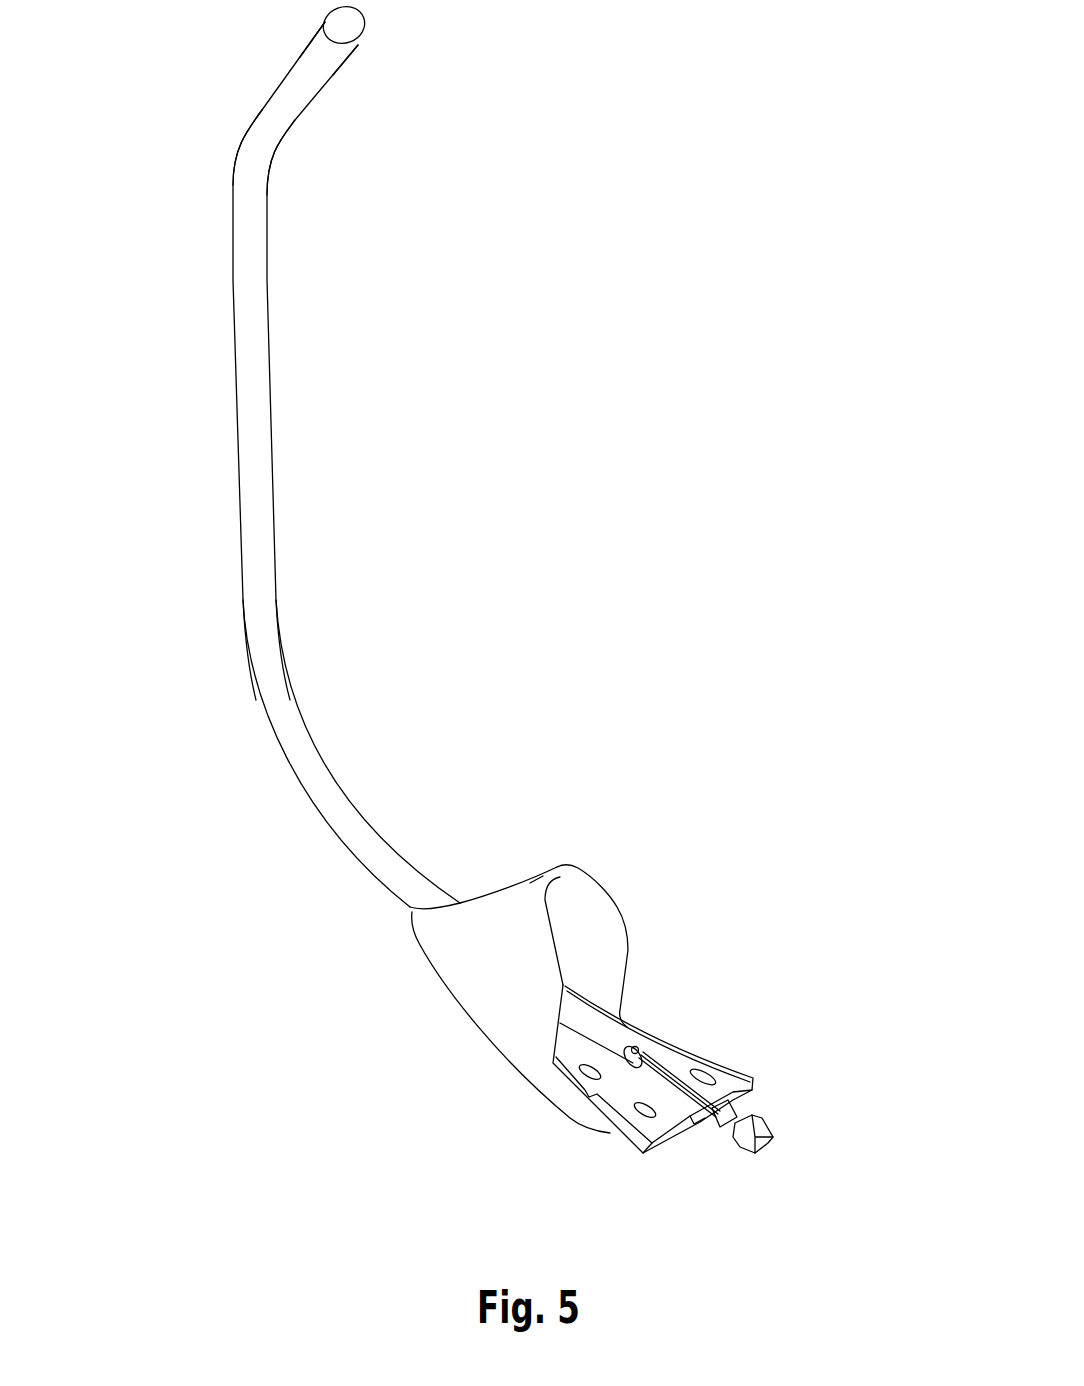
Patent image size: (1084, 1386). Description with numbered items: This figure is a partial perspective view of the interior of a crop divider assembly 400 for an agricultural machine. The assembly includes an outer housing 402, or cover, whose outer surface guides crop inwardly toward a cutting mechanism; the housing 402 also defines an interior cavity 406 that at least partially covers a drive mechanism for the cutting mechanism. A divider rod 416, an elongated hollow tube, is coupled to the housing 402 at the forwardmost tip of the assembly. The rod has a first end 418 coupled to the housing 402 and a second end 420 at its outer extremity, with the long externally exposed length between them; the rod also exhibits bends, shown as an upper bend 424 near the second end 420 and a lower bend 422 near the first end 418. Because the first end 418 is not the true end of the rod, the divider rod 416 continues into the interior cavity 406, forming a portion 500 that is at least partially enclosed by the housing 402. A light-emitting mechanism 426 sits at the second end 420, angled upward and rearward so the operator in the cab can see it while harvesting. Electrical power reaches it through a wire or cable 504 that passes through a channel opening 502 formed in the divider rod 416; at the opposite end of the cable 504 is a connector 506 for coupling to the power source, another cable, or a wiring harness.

The crop divider assembly 400 is at (777, 255).
The outer housing 402 is at (490, 982).
The interior cavity 406 is at (590, 933).
The divider rod 416 is at (250, 390).
The first end 418 is at (465, 900).
The second end 420 is at (363, 48).
The lower bend 422 is at (337, 738).
The upper bend 424 is at (275, 180).
The light-emitting mechanism 426 is at (352, 23).
The portion 500 is at (617, 1037).
The channel opening 502 is at (628, 1073).
The electrical wire or cable 504 is at (680, 1058).
The connector 506 is at (747, 1140).